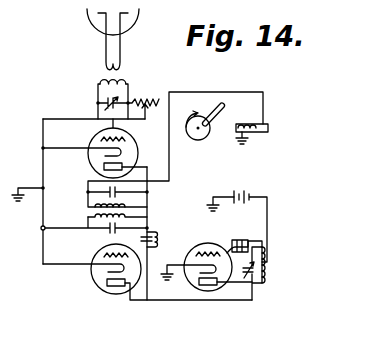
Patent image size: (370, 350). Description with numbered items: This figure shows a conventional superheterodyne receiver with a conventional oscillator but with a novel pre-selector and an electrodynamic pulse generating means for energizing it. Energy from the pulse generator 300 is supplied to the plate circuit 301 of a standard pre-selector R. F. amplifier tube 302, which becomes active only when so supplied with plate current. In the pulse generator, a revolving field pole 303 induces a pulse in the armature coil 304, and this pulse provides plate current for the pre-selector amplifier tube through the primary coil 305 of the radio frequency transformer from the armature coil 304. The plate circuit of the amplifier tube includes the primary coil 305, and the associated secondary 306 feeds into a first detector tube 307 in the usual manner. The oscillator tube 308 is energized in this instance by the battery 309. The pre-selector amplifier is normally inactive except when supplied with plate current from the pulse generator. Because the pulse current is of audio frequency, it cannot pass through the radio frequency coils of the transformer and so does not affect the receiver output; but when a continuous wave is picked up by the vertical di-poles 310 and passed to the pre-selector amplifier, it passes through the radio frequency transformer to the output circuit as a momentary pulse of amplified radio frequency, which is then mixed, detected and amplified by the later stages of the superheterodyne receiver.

The pulse generator 300 is at (207, 138).
The plate circuit 301 is at (149, 172).
The pre-selector R. F. amplifier tube 302 is at (129, 148).
The revolving field pole 303 is at (207, 116).
The armature coil 304 is at (255, 133).
The primary coil of radio frequency transformer 305 is at (90, 207).
The secondary 306 is at (103, 223).
The first detector tube 307 is at (95, 279).
The oscillator tube 308 is at (206, 244).
The battery 309 is at (245, 193).
The vertical di-poles 310 is at (107, 30).